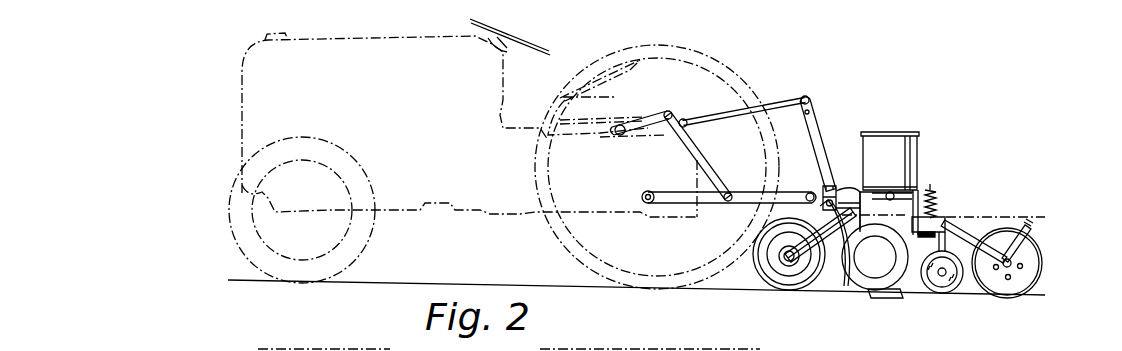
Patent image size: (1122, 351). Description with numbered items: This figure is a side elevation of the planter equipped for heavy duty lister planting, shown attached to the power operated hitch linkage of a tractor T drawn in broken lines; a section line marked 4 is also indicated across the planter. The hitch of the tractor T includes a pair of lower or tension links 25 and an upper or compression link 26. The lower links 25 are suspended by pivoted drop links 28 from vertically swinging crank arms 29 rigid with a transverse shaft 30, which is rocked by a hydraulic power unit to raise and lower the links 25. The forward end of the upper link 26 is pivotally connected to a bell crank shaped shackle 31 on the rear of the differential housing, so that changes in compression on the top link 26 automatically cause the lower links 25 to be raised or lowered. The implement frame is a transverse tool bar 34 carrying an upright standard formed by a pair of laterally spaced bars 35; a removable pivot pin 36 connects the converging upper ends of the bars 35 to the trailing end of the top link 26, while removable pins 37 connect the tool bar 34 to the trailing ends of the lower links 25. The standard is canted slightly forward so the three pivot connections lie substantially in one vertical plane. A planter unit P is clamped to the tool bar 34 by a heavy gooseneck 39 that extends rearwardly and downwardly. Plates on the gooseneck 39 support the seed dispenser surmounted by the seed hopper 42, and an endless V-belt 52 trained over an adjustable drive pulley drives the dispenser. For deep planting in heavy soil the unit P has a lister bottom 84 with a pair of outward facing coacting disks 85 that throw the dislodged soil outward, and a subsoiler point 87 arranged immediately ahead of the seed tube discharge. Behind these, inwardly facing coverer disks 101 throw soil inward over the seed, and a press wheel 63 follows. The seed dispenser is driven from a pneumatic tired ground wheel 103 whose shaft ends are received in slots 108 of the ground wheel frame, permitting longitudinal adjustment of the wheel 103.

The tractor T is at (353, 38).
The planter unit P is at (931, 142).
The lower draft links 25 is at (743, 204).
The upper draft link 26 is at (760, 109).
The drop links 28 is at (707, 165).
The crank arms 29 is at (666, 111).
The transverse shaft 30 is at (616, 133).
The shackle 31 is at (683, 118).
The transverse tool bar 34 is at (835, 186).
The standard bars 35 is at (818, 121).
The pivot pin 36 is at (808, 98).
The removable pins 37 is at (810, 193).
The gooseneck 39 is at (852, 193).
The seed hopper 42 is at (890, 148).
The V-belt 52 is at (818, 222).
The press wheel 63 is at (1048, 263).
The lister bottom 84 is at (813, 292).
The coacting disks 85 is at (863, 270).
The subsoiler point 87 is at (891, 298).
The coverer disks 101 is at (960, 291).
The ground wheel 103 is at (763, 270).
The slots 108 is at (786, 258).
The section line 4- 4 is at (842, 213).